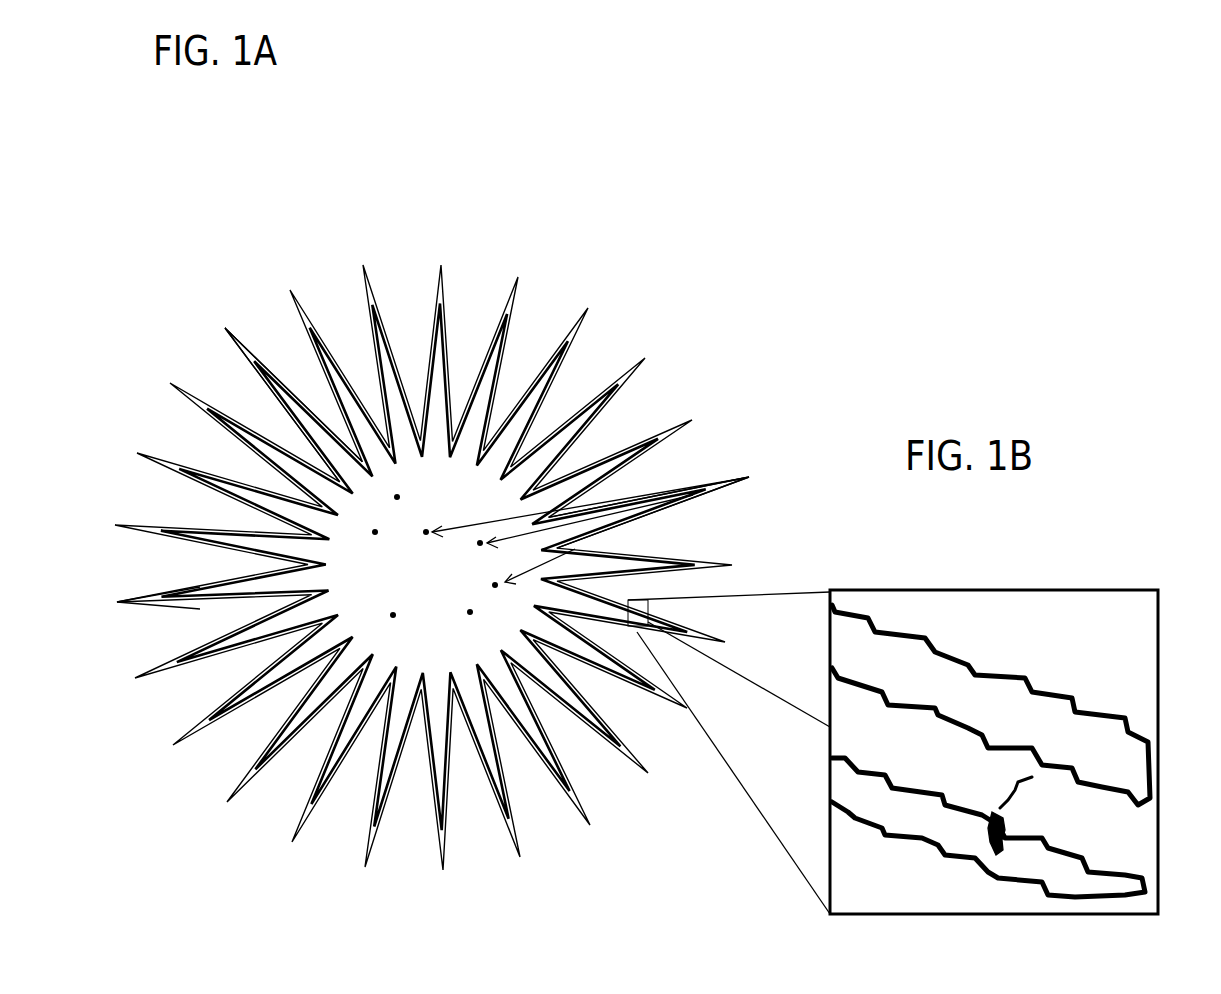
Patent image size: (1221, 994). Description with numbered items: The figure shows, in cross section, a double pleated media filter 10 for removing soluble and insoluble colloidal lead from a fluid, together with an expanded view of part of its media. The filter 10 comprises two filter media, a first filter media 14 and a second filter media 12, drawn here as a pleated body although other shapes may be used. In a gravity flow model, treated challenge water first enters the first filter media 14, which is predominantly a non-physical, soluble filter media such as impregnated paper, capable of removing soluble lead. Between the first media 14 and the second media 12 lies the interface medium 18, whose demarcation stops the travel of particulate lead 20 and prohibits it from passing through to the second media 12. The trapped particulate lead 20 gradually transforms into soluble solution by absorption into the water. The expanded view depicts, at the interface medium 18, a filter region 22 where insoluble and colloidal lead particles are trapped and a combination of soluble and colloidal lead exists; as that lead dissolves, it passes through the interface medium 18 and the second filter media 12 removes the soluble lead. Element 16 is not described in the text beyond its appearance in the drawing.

In FIG. 1A, the filter 10 is at (432, 567).
In FIG. 1A, the second filter media 12 is at (230, 348).
In FIG. 1A, the first filter media 14 is at (212, 493).
In FIG. 1A, the core dots 16 is at (435, 556).
In FIG. 1A, the interface medium 18 is at (162, 596).
In FIG. 1A, the particulate lead 20 is at (750, 477).
In FIG. 1B, the filter region 22 is at (992, 812).